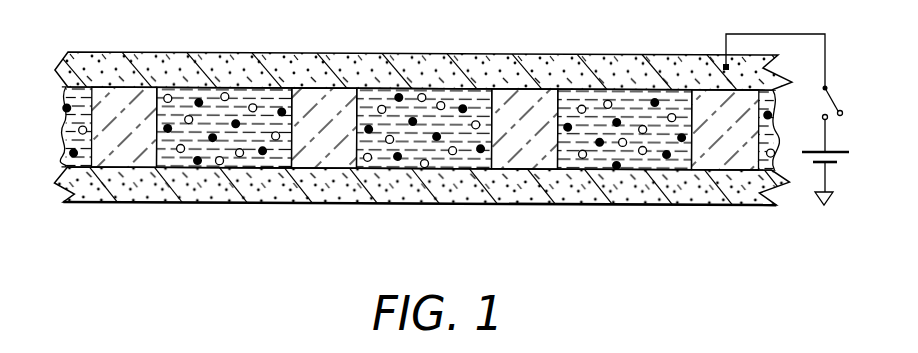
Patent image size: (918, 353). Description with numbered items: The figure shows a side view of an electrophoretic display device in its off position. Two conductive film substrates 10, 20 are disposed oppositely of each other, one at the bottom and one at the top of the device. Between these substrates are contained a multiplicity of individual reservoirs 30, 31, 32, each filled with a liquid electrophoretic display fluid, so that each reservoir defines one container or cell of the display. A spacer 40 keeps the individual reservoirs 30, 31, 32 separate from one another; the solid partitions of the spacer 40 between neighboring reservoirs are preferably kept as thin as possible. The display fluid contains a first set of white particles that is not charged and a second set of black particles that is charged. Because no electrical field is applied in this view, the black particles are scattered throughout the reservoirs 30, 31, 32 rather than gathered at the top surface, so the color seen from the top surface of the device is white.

The conductive film substrate 10 is at (132, 202).
The conductive film substrate 20 is at (144, 52).
The individual reservoir 30 is at (222, 140).
The individual reservoir 31 is at (422, 143).
The individual reservoir 32 is at (613, 142).
The spacer 40 is at (110, 124).